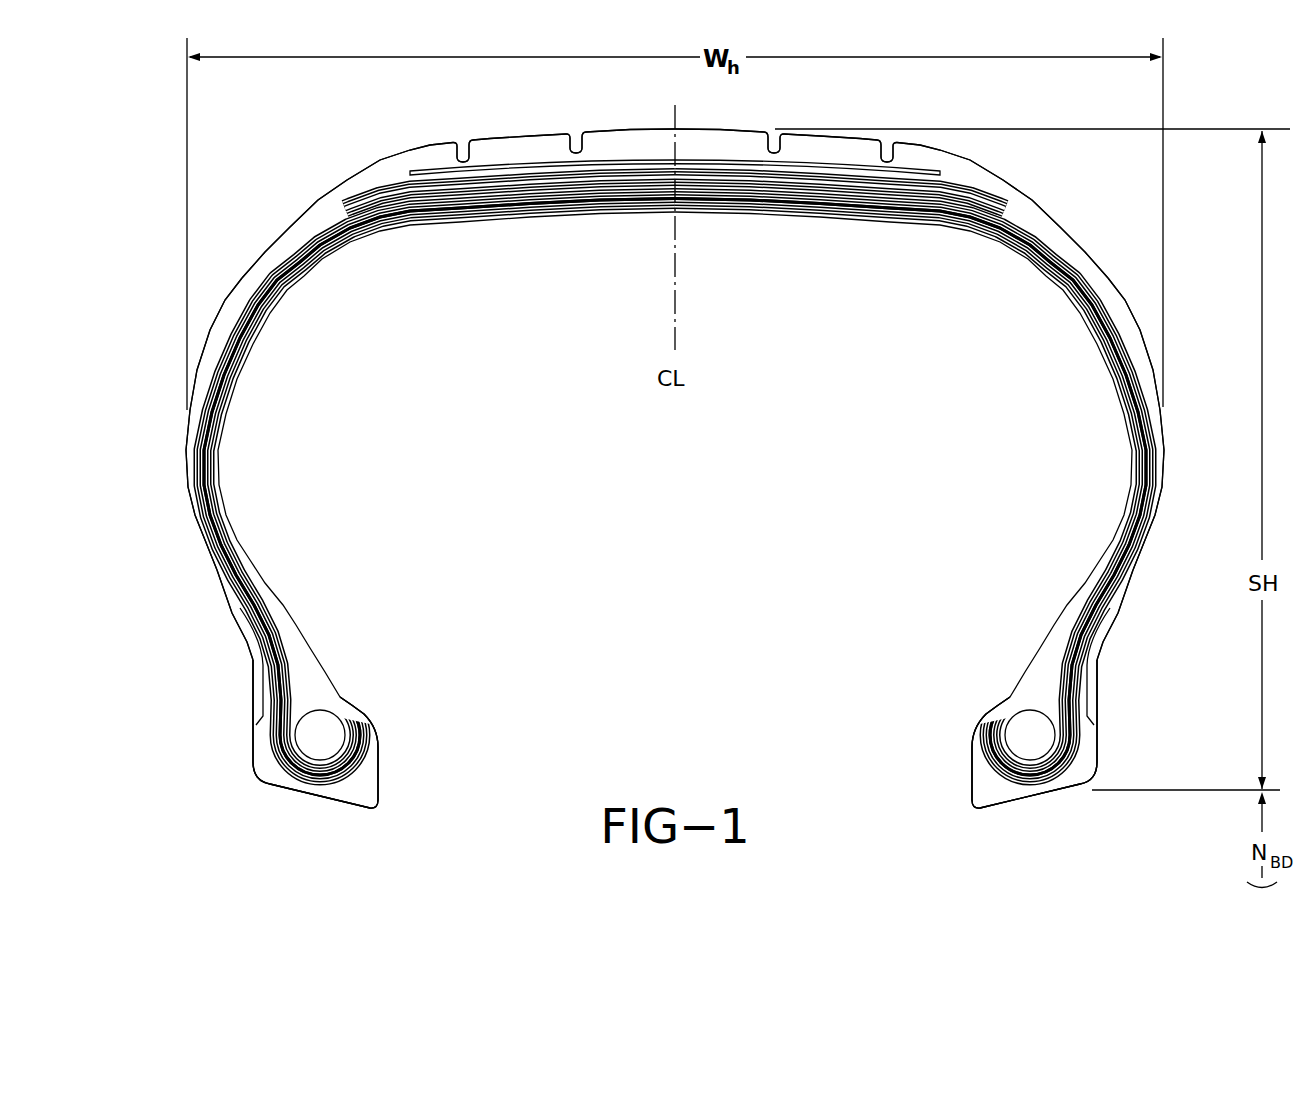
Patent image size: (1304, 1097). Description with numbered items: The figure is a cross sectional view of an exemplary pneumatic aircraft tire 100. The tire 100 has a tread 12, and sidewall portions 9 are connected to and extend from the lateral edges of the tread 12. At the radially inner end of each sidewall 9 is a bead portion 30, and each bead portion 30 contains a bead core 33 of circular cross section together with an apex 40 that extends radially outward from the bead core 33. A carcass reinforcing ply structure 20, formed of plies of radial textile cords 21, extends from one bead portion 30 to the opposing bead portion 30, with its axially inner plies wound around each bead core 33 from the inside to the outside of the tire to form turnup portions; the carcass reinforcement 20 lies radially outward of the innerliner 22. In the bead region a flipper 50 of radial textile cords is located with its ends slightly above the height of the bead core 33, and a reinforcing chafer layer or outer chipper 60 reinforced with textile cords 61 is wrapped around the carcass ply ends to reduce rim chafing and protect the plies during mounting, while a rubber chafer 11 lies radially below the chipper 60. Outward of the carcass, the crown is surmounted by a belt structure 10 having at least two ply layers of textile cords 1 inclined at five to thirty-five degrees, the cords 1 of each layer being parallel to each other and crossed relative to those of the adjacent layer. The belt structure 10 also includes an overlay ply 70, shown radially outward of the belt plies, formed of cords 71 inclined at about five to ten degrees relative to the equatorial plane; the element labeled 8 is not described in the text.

The cords 1 is at (353, 186).
The belt structure 10 is at (675, 394).
The tread 12 is at (640, 142).
The overlay ply 70 is at (675, 151).
The cords 71 is at (515, 165).
The carcass reinforcing ply structure 20 is at (190, 529).
The radial textile cords 21 is at (675, 487).
The innerliner 22 is at (236, 557).
The aircraft tire 100 is at (414, 584).
The apex 40 is at (299, 677).
The flipper 50 is at (323, 703).
The bead core 33 is at (334, 733).
The bead portion 30 is at (675, 734).
The chafer 11 is at (278, 782).
The chafer layer 60 is at (675, 759).
The cords 61 is at (318, 790).
The sidewall portion 9 is at (232, 612).
The bead filler 8 is at (275, 697).